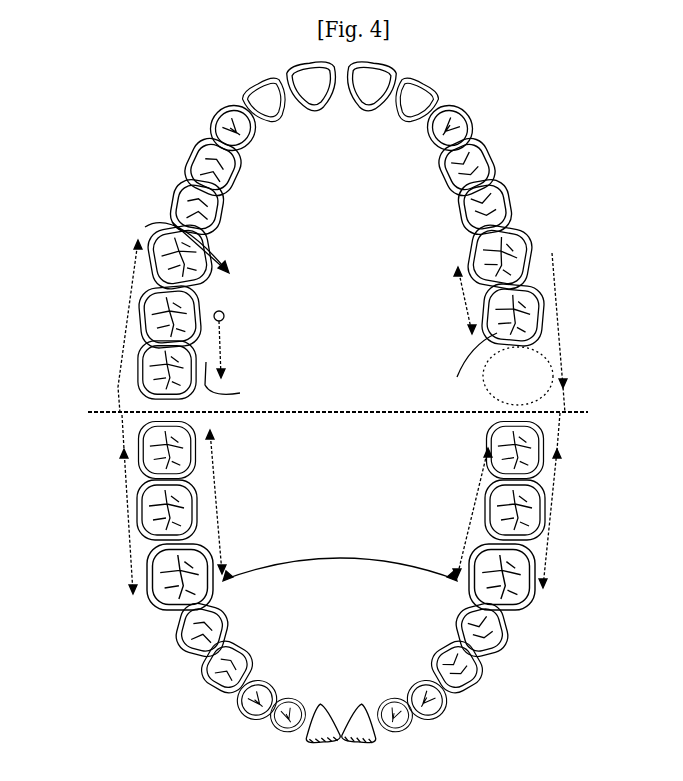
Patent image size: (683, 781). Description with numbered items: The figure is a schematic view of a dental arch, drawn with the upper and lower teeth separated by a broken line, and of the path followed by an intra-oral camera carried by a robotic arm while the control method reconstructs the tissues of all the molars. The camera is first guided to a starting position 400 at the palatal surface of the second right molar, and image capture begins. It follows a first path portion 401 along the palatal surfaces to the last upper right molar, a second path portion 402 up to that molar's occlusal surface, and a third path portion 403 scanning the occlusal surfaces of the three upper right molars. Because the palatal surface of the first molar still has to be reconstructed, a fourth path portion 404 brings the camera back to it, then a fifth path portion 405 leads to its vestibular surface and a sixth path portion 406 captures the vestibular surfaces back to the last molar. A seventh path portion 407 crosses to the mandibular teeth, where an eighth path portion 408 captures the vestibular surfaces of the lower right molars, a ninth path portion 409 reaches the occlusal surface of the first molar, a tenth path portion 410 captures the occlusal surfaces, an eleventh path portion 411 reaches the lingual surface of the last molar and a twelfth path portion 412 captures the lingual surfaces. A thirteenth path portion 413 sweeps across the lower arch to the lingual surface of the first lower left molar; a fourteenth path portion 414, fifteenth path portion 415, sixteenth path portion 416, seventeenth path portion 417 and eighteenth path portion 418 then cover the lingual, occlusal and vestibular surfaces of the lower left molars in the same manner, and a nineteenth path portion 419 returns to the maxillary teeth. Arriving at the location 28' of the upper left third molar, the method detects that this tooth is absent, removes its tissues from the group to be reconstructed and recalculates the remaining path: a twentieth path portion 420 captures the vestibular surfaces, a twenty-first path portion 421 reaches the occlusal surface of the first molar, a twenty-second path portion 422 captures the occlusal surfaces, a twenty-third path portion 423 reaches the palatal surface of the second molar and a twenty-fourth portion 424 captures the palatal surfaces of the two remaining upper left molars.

The starting position 400 is at (225, 313).
The first path portion 401 is at (245, 349).
The second path portion 402 is at (245, 383).
The third path portion 403 is at (148, 285).
The fourth path portion 404 is at (230, 258).
The fifth path portion 405 is at (140, 302).
The sixth path portion 406 is at (143, 316).
The seventh path portion 407 is at (132, 374).
The eighth path portion 408 is at (133, 504).
The ninth path portion 409 is at (167, 630).
The tenth path portion 410 is at (168, 548).
The eleventh path portion 411 is at (207, 434).
The twelfth path portion 412 is at (235, 502).
The thirteenth path portion 413 is at (340, 556).
The fourteenth path portion 414 is at (457, 513).
The fifteenth path portion 415 is at (488, 450).
The sixteenth path portion 416 is at (520, 543).
The seventeenth path portion 417 is at (536, 580).
The eighteenth path portion 418 is at (571, 500).
The nineteenth path portion 419 is at (580, 441).
The twentieth path portion 420 is at (581, 333).
The twenty-first path portion 421 is at (523, 252).
The twenty-second path portion 422 is at (512, 318).
The twenty-third path portion 423 is at (463, 369).
The twenty-fourth path portion 424 is at (442, 300).
The location of the molar 28 28' is at (553, 376).